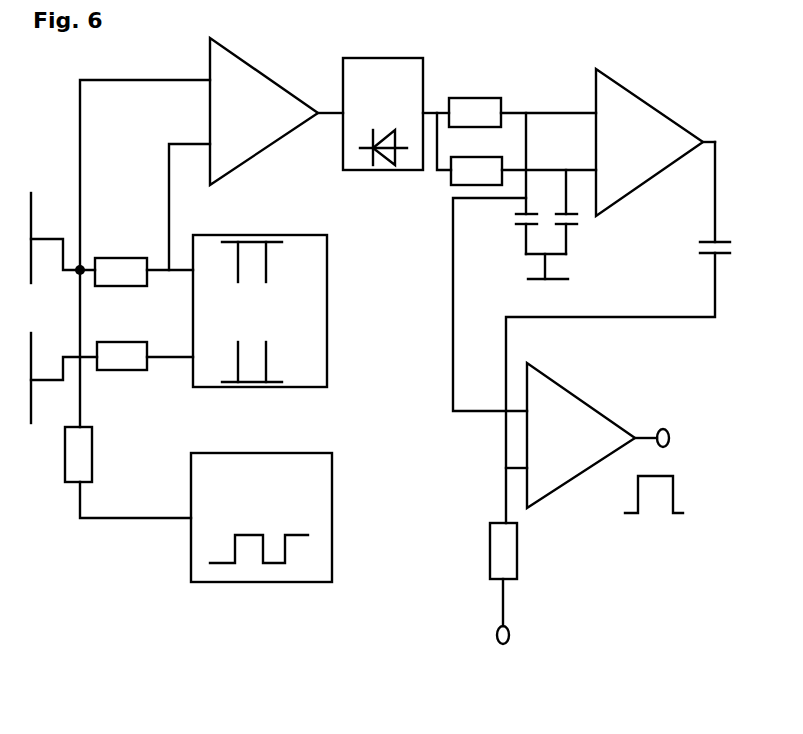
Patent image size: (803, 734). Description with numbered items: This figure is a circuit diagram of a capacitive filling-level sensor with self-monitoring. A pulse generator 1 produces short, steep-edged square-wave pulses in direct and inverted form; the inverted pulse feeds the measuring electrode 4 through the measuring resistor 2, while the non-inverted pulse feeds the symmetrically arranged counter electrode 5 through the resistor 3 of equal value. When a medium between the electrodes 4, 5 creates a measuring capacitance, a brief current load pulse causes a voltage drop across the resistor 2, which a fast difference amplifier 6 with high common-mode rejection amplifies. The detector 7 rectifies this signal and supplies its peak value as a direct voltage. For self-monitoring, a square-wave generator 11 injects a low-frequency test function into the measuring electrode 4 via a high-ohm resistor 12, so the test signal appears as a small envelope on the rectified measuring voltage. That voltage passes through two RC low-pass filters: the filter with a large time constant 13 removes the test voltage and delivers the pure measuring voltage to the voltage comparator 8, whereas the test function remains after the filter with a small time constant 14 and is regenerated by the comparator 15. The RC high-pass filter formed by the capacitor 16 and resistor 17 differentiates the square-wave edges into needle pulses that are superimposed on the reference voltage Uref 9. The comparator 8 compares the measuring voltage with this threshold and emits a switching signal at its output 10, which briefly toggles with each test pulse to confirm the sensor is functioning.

The pulse generator 1 is at (260, 311).
The measuring resistor 2 is at (144, 272).
The resistor 3 is at (145, 356).
The measuring electrode 4 is at (59, 220).
The counter electrode 5 is at (58, 395).
The difference amplifier 6 is at (276, 111).
The detector 7 is at (397, 114).
The voltage comparator 8 is at (581, 435).
The reference voltage 9 is at (510, 665).
The output 10 is at (654, 449).
The square-wave generator 11 is at (261, 517).
The high-ohm resistor 12 is at (99, 454).
The RC low-pass filter with large time constant 13 is at (522, 179).
The RC low-pass filter with small time constant 14 is at (530, 208).
The comparator 15 is at (655, 142).
The RC high-pass filter capacitor 16 is at (641, 332).
The RC high-pass filter resistor 17 is at (525, 574).